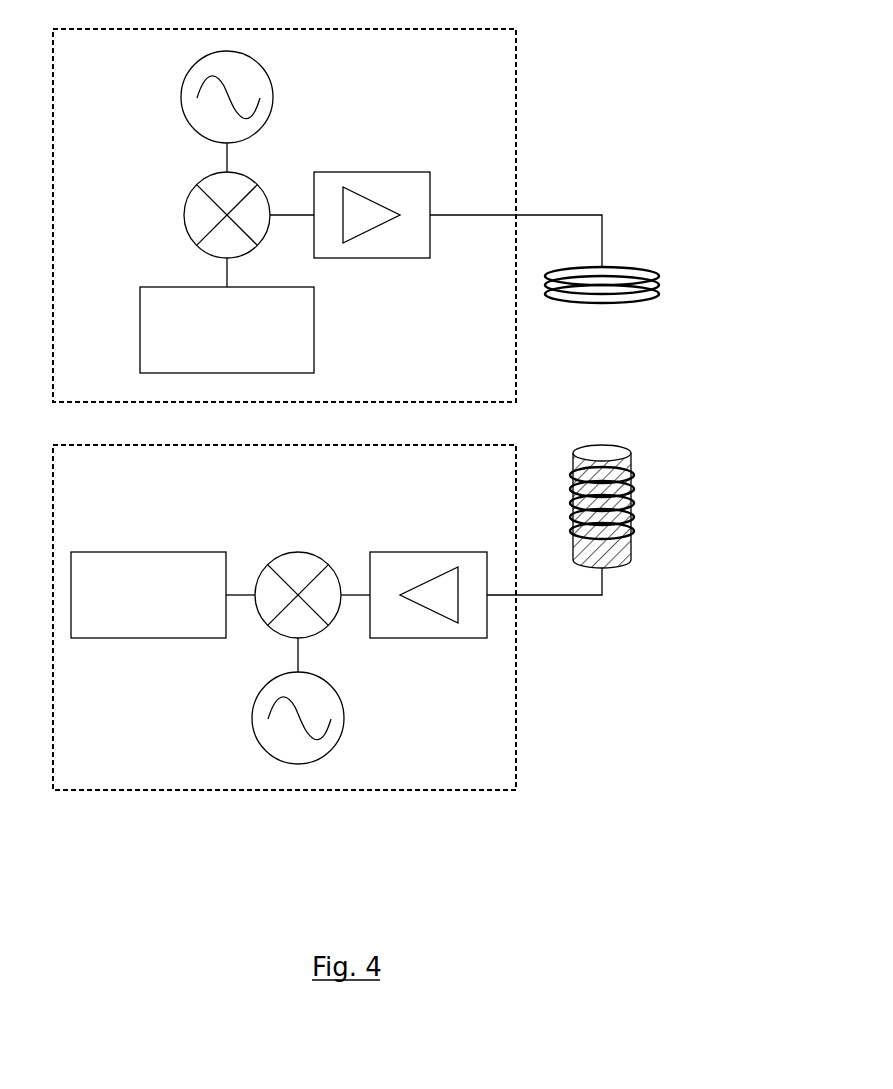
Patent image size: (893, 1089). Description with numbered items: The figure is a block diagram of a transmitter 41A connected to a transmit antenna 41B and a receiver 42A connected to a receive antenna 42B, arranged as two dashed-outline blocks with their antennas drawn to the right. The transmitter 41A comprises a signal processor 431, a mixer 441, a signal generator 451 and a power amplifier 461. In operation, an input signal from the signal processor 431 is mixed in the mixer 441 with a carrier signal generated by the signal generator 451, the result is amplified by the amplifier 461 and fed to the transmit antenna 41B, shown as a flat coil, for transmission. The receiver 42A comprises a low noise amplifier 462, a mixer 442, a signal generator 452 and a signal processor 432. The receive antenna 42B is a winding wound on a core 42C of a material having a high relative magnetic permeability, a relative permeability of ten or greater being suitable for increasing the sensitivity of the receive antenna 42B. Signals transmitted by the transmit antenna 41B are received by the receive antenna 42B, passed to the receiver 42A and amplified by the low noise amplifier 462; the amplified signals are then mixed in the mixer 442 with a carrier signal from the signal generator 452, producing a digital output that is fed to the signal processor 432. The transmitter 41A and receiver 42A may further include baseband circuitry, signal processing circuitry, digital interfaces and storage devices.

The transmitter 41A is at (517, 54).
The transmit antenna 41B is at (663, 283).
The receiver 42A is at (517, 678).
The receive antenna 42B is at (633, 513).
The magnetic core 42C is at (632, 458).
The signal processor 431 is at (168, 287).
The signal processor 432 is at (155, 552).
The mixer 441 is at (189, 193).
The mixer 442 is at (300, 551).
The signal generator 451 is at (183, 88).
The signal generator 452 is at (345, 718).
The power amplifier 461 is at (342, 172).
The low noise amplifier 462 is at (443, 552).